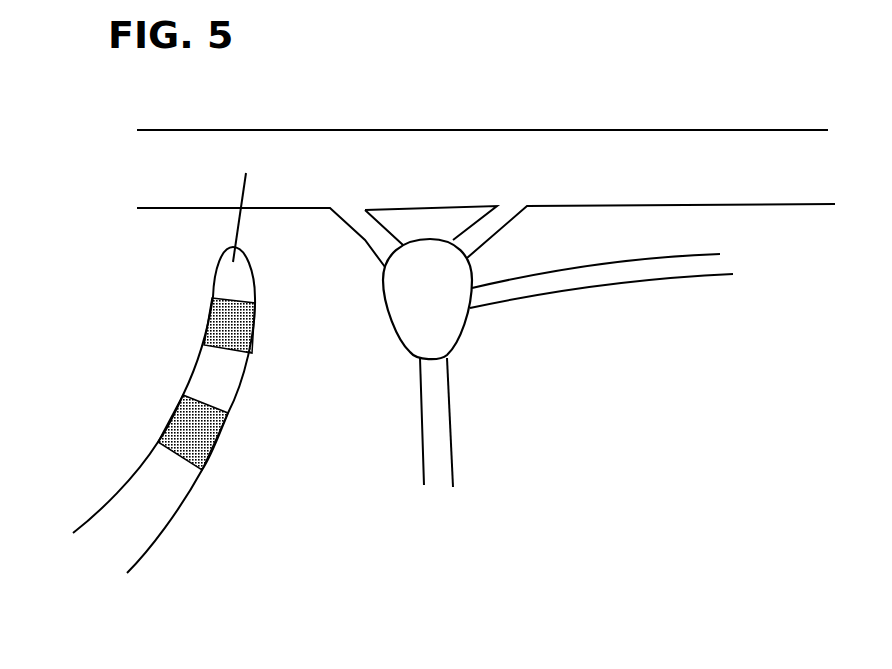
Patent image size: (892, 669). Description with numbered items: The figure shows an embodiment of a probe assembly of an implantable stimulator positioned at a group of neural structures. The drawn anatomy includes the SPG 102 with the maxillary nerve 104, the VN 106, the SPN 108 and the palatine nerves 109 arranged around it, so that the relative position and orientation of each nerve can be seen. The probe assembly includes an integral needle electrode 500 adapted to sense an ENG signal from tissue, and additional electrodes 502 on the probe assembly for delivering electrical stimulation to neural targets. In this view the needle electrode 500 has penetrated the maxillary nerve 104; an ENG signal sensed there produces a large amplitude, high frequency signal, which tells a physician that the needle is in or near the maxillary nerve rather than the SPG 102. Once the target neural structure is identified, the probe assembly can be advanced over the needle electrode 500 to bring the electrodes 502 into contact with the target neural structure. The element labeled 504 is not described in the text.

The maxillary nerve 104 is at (743, 153).
The SPN 108 is at (368, 237).
The SPG 102 is at (458, 330).
The VN 106 is at (710, 277).
The palatine nerves 109 is at (443, 465).
The needle electrode 500 is at (190, 369).
The electrodes 502 is at (173, 413).
The needle / guidewire 504 is at (236, 189).